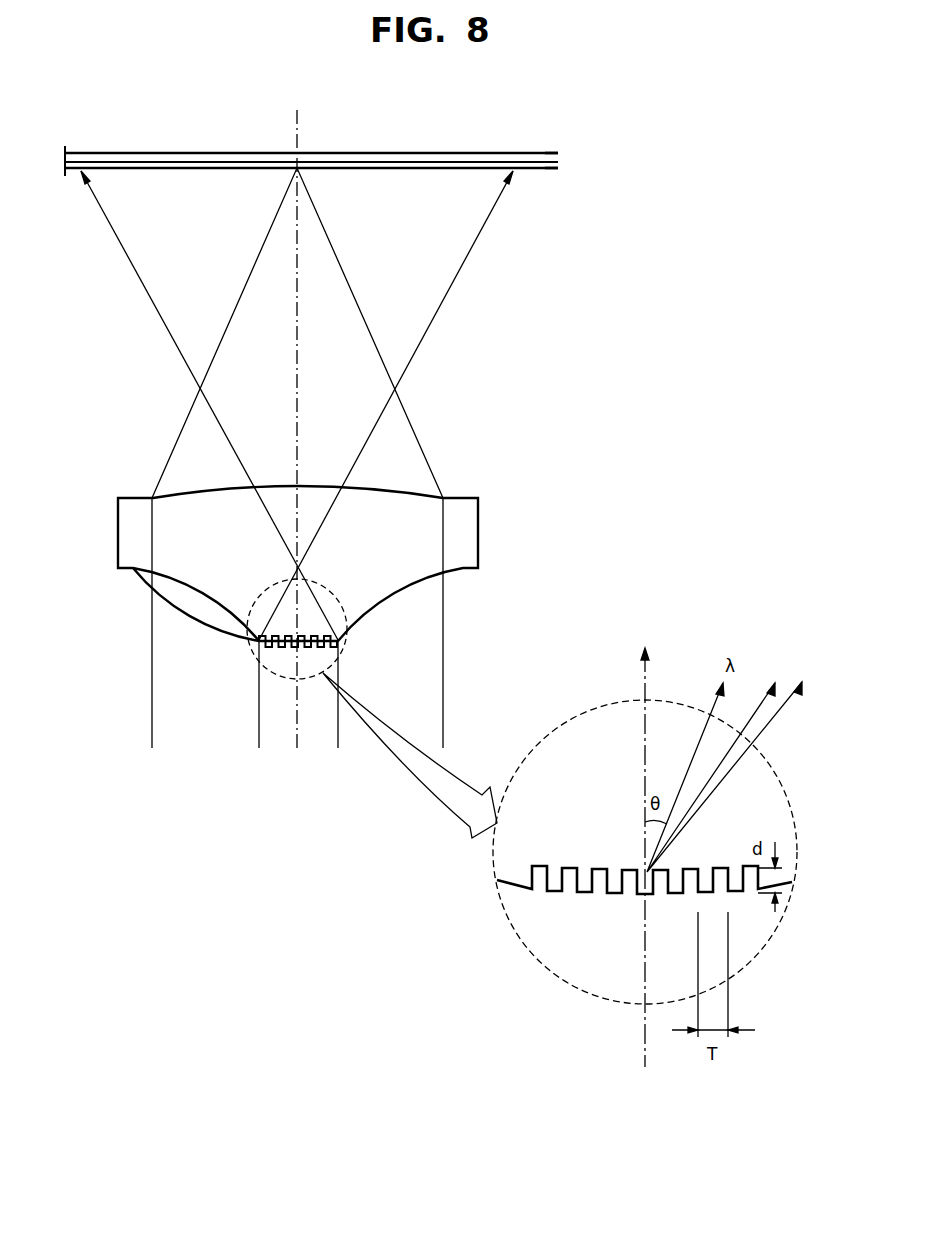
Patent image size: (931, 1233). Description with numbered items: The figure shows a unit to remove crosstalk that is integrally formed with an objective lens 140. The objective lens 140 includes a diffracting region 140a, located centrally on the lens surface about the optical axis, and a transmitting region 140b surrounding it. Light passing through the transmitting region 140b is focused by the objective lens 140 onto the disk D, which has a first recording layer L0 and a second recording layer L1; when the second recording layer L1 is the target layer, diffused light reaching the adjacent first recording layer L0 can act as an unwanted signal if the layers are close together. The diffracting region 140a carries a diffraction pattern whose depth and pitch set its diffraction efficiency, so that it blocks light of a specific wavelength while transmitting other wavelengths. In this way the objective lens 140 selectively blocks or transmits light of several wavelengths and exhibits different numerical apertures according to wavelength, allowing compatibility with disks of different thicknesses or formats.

The objective lens 140 is at (120, 496).
The diffracting region 140a is at (312, 648).
The transmitting region 140b is at (197, 618).
The disk D is at (500, 152).
The second recording layer L1 is at (558, 157).
The first recording layer L0 is at (558, 167).